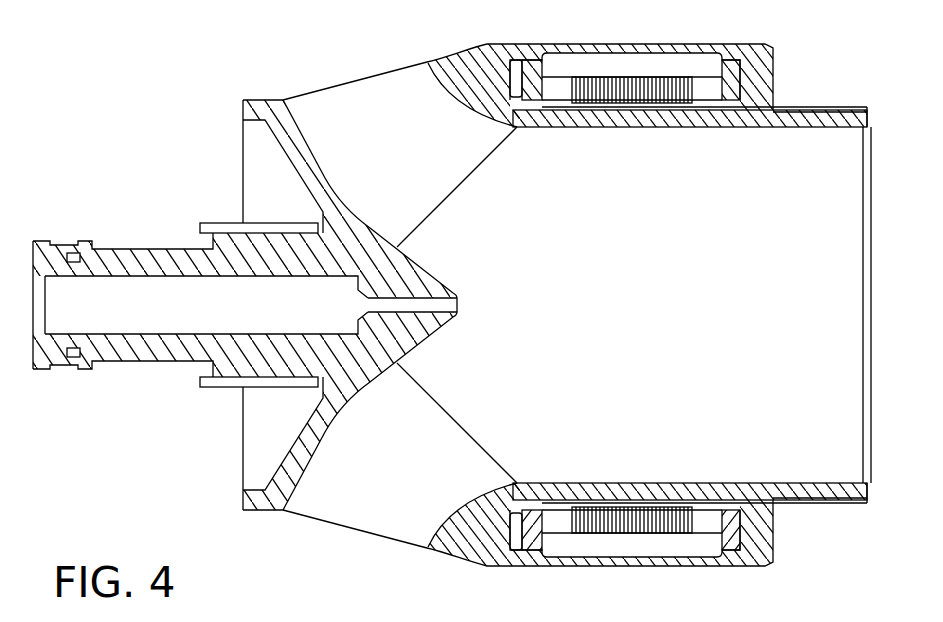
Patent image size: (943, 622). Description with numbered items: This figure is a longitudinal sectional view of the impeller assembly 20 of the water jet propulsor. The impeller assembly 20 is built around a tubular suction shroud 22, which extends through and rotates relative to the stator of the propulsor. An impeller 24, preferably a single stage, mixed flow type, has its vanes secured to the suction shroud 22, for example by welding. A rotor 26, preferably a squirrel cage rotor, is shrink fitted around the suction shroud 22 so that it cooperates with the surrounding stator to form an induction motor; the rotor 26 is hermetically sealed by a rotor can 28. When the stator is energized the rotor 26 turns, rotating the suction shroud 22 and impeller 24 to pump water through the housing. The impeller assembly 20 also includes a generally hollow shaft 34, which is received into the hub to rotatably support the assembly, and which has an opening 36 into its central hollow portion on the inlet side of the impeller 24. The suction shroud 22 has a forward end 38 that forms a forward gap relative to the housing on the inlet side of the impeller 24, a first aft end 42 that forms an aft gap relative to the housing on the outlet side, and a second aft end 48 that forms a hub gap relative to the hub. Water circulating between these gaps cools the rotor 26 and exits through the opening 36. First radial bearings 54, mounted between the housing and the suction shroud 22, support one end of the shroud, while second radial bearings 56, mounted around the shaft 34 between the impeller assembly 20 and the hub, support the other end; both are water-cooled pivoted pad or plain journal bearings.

The impeller assembly 20 is at (862, 89).
The tubular suction shroud 22 is at (740, 127).
The impeller 24 is at (463, 181).
The rotor 26 is at (628, 90).
The rotor can 28 is at (642, 567).
The hollow shaft 34 is at (133, 372).
The opening 36 is at (400, 303).
The forward end 38 is at (860, 127).
The first aft end 42 is at (440, 61).
The second aft end 48 is at (260, 100).
The first radial bearings 54 is at (795, 107).
The second radial bearings 56 is at (216, 387).